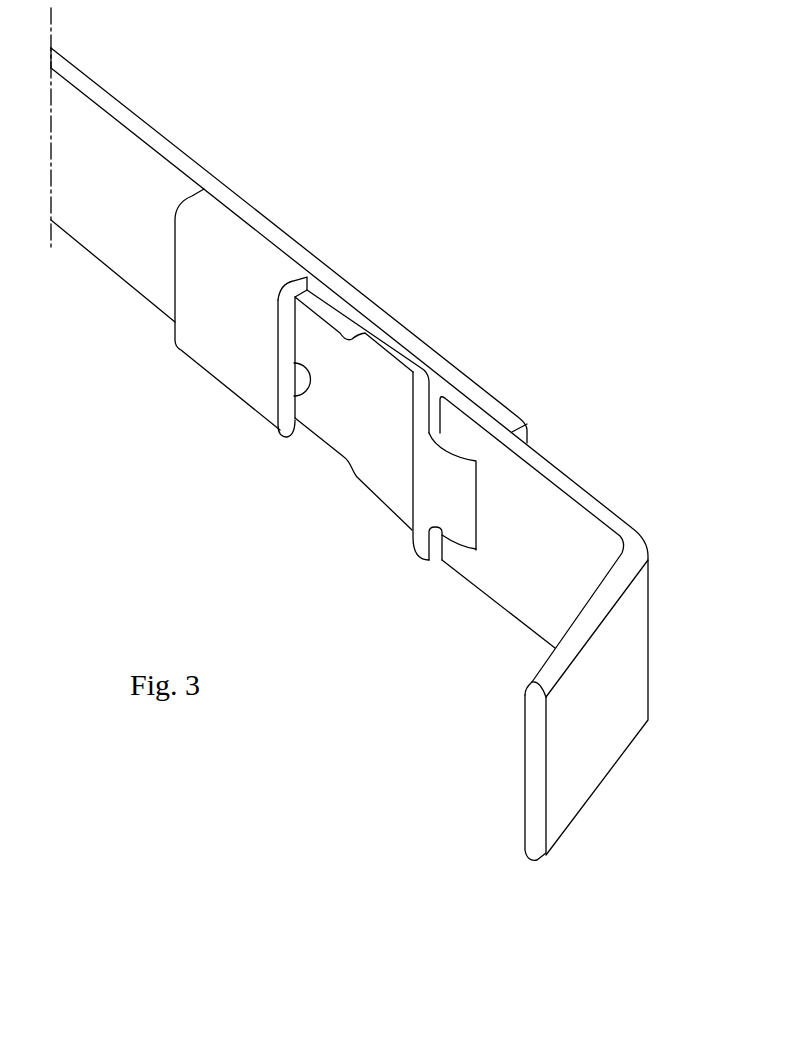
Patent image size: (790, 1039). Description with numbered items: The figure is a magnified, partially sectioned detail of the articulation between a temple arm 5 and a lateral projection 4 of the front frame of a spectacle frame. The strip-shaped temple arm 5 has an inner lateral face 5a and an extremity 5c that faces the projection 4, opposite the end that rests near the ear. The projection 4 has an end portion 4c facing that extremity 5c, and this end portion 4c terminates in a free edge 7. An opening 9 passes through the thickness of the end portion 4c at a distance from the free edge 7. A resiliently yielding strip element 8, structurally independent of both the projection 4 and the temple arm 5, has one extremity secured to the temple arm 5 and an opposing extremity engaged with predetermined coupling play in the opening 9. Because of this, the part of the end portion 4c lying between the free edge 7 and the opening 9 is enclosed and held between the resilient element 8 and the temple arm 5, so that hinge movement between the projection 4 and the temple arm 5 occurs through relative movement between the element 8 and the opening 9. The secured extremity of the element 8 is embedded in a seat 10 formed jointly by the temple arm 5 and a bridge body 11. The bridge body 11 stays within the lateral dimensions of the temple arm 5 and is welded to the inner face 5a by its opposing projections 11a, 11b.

The lateral projection 4 is at (653, 664).
The end portion of the projection 4c is at (458, 415).
The temple arm 5 is at (134, 113).
The inner lateral face of the temple arm 5a is at (145, 277).
The extremity of the temple arm 5c is at (531, 436).
The free edge of the projection 7 is at (443, 390).
The resiliently yielding element 8 is at (356, 437).
The opening 9 is at (472, 548).
The seat 10 is at (292, 398).
The bridge body 11 is at (208, 341).
The projection of the bridge body 11a is at (308, 280).
The projection of the bridge body 11b is at (303, 438).